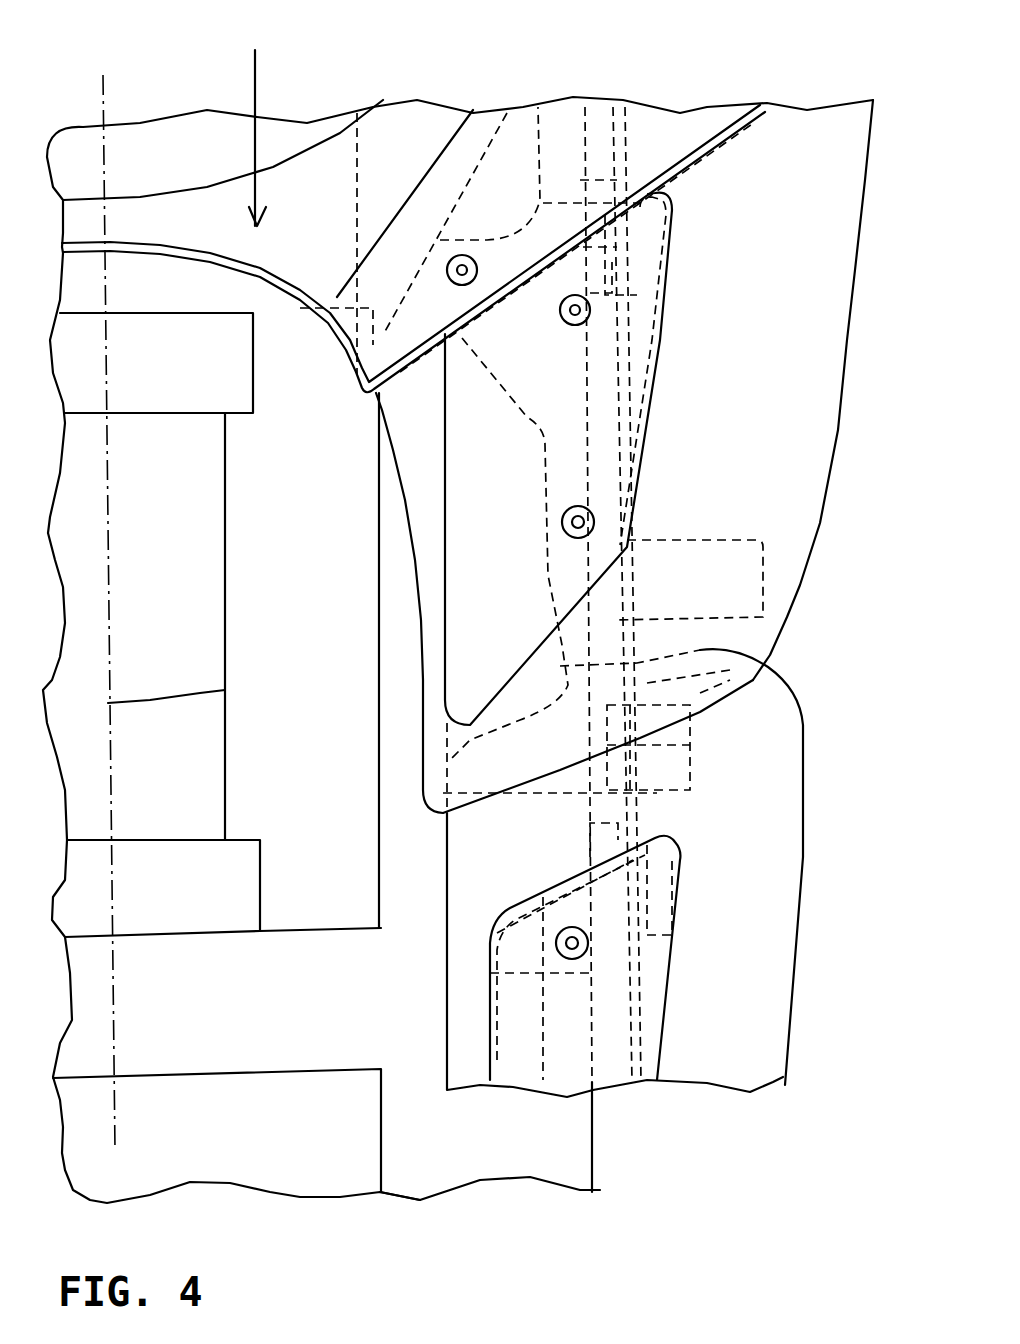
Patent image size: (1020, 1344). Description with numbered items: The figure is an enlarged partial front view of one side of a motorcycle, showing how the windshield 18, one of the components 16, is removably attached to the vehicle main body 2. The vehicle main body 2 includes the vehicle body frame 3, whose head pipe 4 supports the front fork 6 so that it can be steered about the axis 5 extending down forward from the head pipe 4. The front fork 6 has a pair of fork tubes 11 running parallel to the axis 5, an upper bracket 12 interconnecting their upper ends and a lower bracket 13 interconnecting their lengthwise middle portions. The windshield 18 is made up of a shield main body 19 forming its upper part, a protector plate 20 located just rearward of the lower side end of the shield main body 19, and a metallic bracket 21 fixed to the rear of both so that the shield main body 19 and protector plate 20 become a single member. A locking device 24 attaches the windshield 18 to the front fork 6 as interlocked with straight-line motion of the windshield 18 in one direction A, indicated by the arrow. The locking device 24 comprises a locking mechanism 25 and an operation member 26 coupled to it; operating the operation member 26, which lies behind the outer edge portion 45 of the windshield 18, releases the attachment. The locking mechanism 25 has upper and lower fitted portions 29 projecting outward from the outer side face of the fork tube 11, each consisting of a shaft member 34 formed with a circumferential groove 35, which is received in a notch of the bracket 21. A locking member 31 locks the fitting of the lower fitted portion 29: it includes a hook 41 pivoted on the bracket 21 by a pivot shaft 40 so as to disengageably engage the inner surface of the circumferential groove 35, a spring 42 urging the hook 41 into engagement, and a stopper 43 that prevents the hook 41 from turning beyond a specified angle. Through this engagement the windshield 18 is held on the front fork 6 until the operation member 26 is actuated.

The vehicle main body 2 is at (617, 1140).
The vehicle body frame 3 is at (235, 557).
The head pipe 4 is at (193, 633).
The axis 5 is at (230, 688).
The front fork 6 is at (597, 1163).
The fork tubes 11 is at (475, 1157).
The upper bracket 12 is at (171, 292).
The lower bracket 13 is at (180, 970).
The components 16 is at (447, 88).
The windshield 18 is at (520, 158).
The shield main body 19 is at (797, 143).
The protector plates 20 is at (752, 1040).
The brackets 21 is at (650, 368).
The locking device 24 is at (736, 777).
The locking mechanism 25 is at (507, 603).
The operation member 26 is at (763, 560).
The fitted portions 29 is at (757, 220).
The locking member 31 is at (443, 793).
The shaft member 34 is at (660, 228).
The circumferential groove 35 is at (662, 258).
The pivot shaft 40 is at (522, 690).
The hook 41 is at (600, 820).
The spring 42 is at (797, 677).
The stopper 43 is at (490, 973).
The outer edge portions 45 is at (793, 540).
The one direction A is at (255, 78).